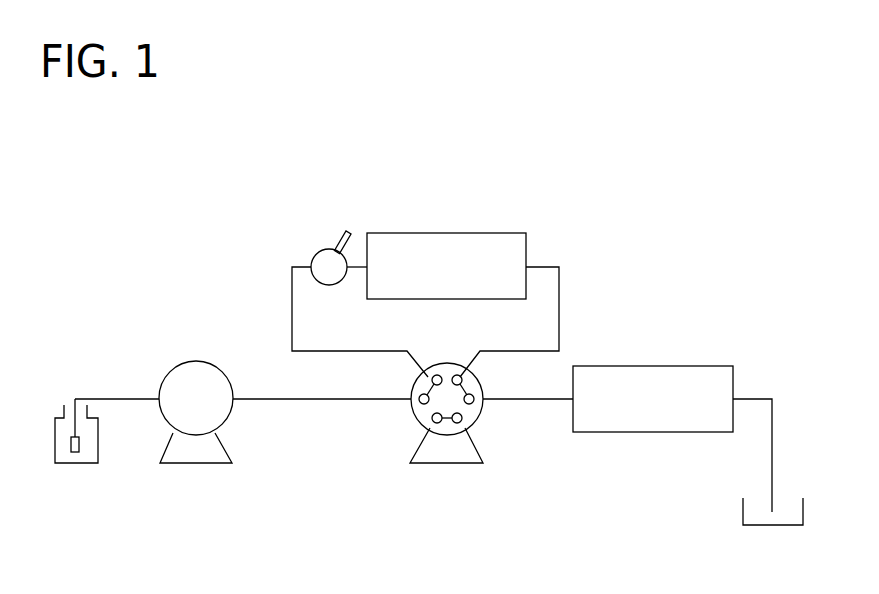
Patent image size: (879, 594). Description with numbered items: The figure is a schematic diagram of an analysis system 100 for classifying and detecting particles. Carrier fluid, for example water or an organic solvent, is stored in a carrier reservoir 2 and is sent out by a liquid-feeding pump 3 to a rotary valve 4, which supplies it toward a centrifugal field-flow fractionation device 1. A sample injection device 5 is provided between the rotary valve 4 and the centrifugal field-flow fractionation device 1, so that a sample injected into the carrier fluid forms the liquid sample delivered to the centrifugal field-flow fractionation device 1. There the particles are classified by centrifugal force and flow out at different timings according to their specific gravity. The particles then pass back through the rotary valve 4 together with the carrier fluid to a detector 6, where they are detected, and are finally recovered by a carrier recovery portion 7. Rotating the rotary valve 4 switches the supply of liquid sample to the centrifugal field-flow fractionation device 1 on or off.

The analysis system 100 is at (683, 190).
The centrifugal field-flow fractionation device 1 is at (489, 232).
The carrier reservoir 2 is at (84, 464).
The liquid-feeding pump 3 is at (205, 464).
The rotary valve 4 is at (415, 418).
The sample injection device 5 is at (318, 253).
The detector 6 is at (695, 366).
The carrier recovery portion 7 is at (757, 526).